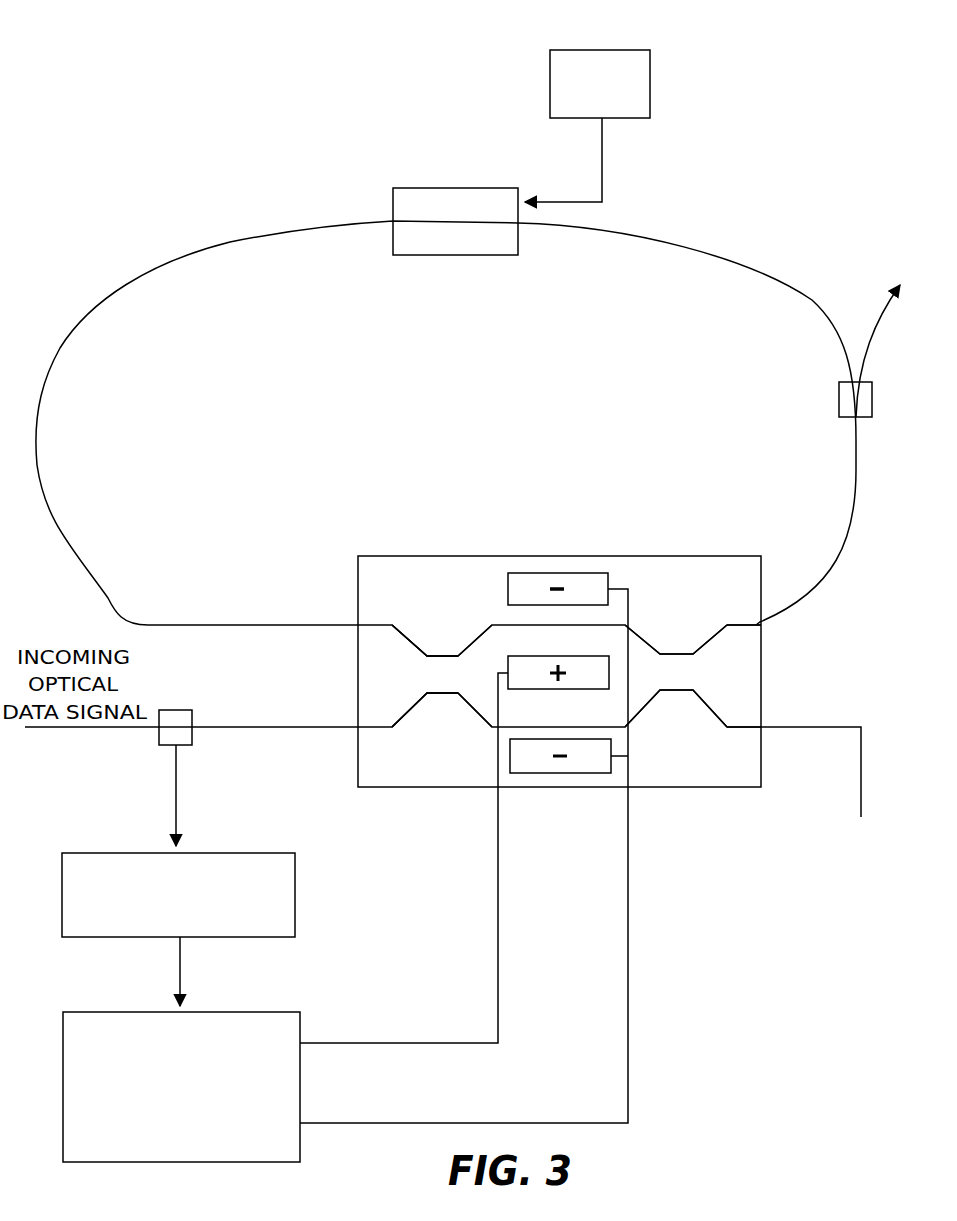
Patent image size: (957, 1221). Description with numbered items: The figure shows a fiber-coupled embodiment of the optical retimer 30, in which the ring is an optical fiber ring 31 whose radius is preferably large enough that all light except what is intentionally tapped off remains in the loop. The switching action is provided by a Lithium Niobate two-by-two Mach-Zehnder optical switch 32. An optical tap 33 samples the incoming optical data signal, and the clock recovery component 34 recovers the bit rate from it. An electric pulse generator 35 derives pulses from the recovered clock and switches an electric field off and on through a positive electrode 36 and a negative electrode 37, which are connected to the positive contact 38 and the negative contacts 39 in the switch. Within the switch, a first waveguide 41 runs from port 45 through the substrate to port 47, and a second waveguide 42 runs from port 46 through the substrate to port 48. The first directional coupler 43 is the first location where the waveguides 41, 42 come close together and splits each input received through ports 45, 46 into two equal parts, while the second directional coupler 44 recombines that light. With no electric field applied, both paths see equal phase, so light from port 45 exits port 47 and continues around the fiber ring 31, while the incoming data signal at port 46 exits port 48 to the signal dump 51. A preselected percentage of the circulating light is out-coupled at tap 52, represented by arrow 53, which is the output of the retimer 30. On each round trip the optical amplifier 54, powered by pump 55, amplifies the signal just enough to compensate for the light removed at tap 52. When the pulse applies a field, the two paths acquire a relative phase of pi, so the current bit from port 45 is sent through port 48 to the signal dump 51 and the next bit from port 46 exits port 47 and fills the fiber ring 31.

The optical retimer 30 is at (735, 108).
The optical fiber ring 31 is at (446, 419).
The Lithium Niobate 2-by-2 Mach-Zehnder optical switch 32 is at (350, 548).
The optical tap 33 is at (155, 755).
The clock recovery component 34 is at (245, 853).
The electric pulse generator 35 is at (230, 1012).
The positive electrode 36 is at (500, 966).
The negative electrode 37 is at (630, 966).
The positive contact 38 is at (522, 656).
The negative contact 39 is at (582, 573).
The first waveguide 41 is at (381, 617).
The second waveguide 42 is at (405, 736).
The first directional coupler 43 is at (445, 640).
The second directional coupler 44 is at (678, 704).
The port 45 is at (543, 626).
The port 46 is at (393, 722).
The port 47 is at (760, 633).
The port 48 is at (760, 736).
The signal dump 51 is at (836, 803).
The tap 52 is at (835, 428).
The arrow 53 is at (879, 337).
The optical amplifier 54 is at (493, 188).
The pump 55 is at (631, 50).